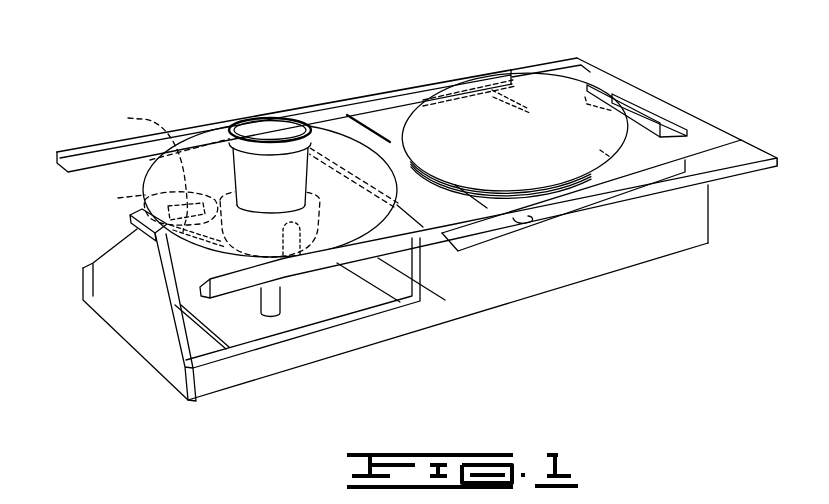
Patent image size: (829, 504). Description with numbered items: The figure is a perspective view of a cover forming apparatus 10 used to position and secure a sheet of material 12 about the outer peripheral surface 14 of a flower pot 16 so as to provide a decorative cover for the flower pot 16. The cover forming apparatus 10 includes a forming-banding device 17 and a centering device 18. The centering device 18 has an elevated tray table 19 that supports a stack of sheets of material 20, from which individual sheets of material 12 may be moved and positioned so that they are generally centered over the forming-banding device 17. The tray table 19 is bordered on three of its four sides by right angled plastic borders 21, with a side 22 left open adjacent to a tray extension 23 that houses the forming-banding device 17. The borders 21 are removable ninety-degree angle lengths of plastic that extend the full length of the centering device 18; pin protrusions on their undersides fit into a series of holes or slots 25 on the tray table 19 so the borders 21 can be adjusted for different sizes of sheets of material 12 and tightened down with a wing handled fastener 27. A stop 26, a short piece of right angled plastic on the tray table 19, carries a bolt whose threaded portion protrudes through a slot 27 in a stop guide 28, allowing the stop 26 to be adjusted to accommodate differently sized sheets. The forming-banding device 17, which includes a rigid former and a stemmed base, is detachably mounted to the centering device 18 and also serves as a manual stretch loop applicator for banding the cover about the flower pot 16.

The cover forming apparatus 10 is at (415, 82).
The sheet of material 12 is at (143, 177).
The outer peripheral surface 14 is at (237, 165).
The flower pot 16 is at (287, 108).
The forming-banding device 17 is at (283, 301).
The centering device 18 is at (637, 200).
The tray table 19 is at (556, 68).
The stack of sheets of material 20 is at (572, 86).
The right angled plastic borders 21 is at (352, 99).
The side 22 is at (447, 250).
The tray extension 23 is at (244, 377).
The holes or slots 25 is at (660, 151).
The stop 26 is at (131, 217).
The slot 27 is at (156, 217).
The stop guide 28 is at (142, 169).